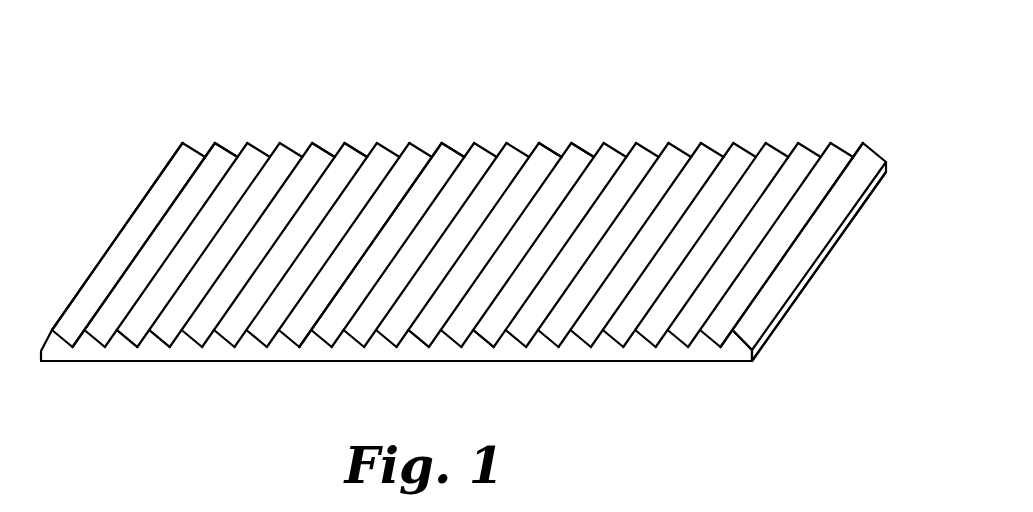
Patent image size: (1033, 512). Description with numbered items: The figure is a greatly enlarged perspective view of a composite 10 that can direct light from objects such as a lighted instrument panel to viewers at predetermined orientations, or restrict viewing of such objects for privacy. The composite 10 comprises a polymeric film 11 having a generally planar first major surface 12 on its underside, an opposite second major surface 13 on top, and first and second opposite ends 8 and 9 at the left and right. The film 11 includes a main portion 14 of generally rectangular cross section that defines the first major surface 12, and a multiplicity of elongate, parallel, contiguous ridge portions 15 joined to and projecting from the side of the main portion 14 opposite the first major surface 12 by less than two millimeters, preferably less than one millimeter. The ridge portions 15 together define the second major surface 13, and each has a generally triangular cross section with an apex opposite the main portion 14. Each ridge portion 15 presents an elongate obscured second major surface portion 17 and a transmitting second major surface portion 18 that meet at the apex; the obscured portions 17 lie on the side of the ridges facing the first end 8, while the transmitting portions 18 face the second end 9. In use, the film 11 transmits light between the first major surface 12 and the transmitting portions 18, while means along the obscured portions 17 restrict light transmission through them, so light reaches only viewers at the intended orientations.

The first end 8 is at (125, 222).
The second end 9 is at (812, 277).
The composite 10 is at (634, 66).
The polymeric film 11 is at (228, 140).
The first major surface 12 is at (265, 363).
The second major surface 13 is at (447, 157).
The main portion 14 is at (734, 354).
The ridge portions 15 is at (556, 142).
The obscured second major surface portion 17 is at (430, 337).
The transmitting second major surface portion 18 is at (347, 155).